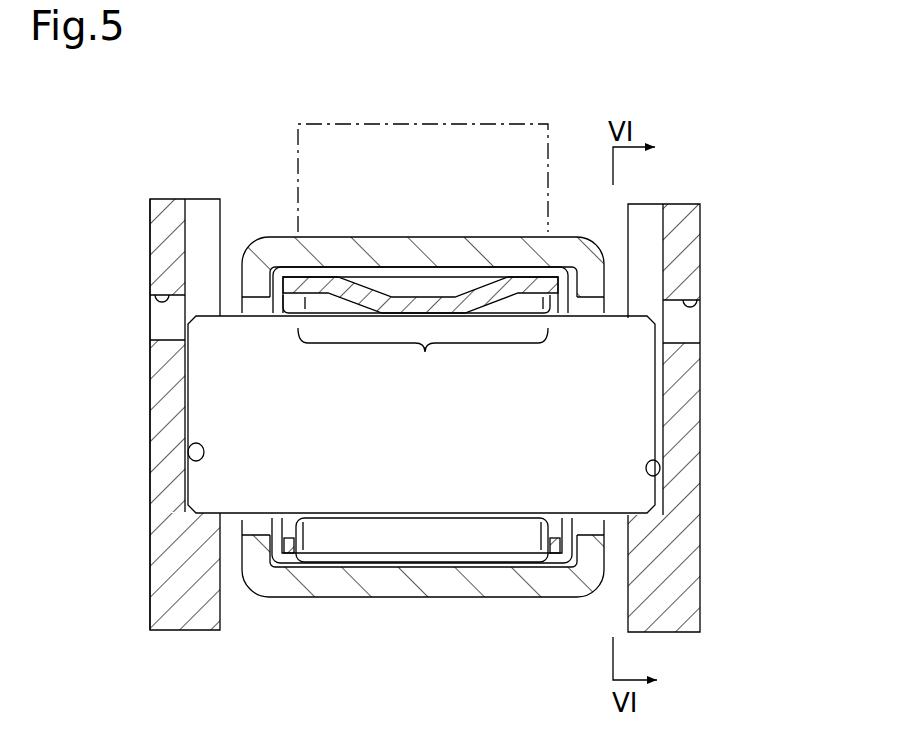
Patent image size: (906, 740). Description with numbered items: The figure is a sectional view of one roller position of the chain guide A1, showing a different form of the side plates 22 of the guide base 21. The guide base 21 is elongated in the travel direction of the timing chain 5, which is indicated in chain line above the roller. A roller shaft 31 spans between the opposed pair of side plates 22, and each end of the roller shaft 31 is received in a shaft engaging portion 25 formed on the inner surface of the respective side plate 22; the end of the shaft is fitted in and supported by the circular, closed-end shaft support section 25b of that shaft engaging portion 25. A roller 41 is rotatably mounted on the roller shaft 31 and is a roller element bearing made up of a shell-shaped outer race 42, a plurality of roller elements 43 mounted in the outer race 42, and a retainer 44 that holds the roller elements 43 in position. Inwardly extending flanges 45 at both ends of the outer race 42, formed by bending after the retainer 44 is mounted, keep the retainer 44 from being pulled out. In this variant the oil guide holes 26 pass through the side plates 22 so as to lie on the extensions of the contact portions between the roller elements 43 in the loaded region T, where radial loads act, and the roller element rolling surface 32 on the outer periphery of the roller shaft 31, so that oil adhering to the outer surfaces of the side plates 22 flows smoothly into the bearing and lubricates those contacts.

The timing chain 5 is at (312, 122).
The guide base 21 is at (435, 373).
The side plate 22 is at (160, 380).
The shaft engaging portion 25 is at (427, 373).
The shaft support section 25b is at (200, 453).
The oil guide hole 26 is at (158, 300).
The roller shaft 31 is at (440, 470).
The roller element rolling surface 32 is at (408, 518).
The roller 41 is at (391, 213).
The outer race 42 is at (335, 250).
The roller element 43 is at (396, 279).
The retainer 44 is at (444, 300).
The inwardly extending flange 45 is at (257, 268).
The chain guide A1 is at (147, 233).
The loaded region T is at (423, 357).